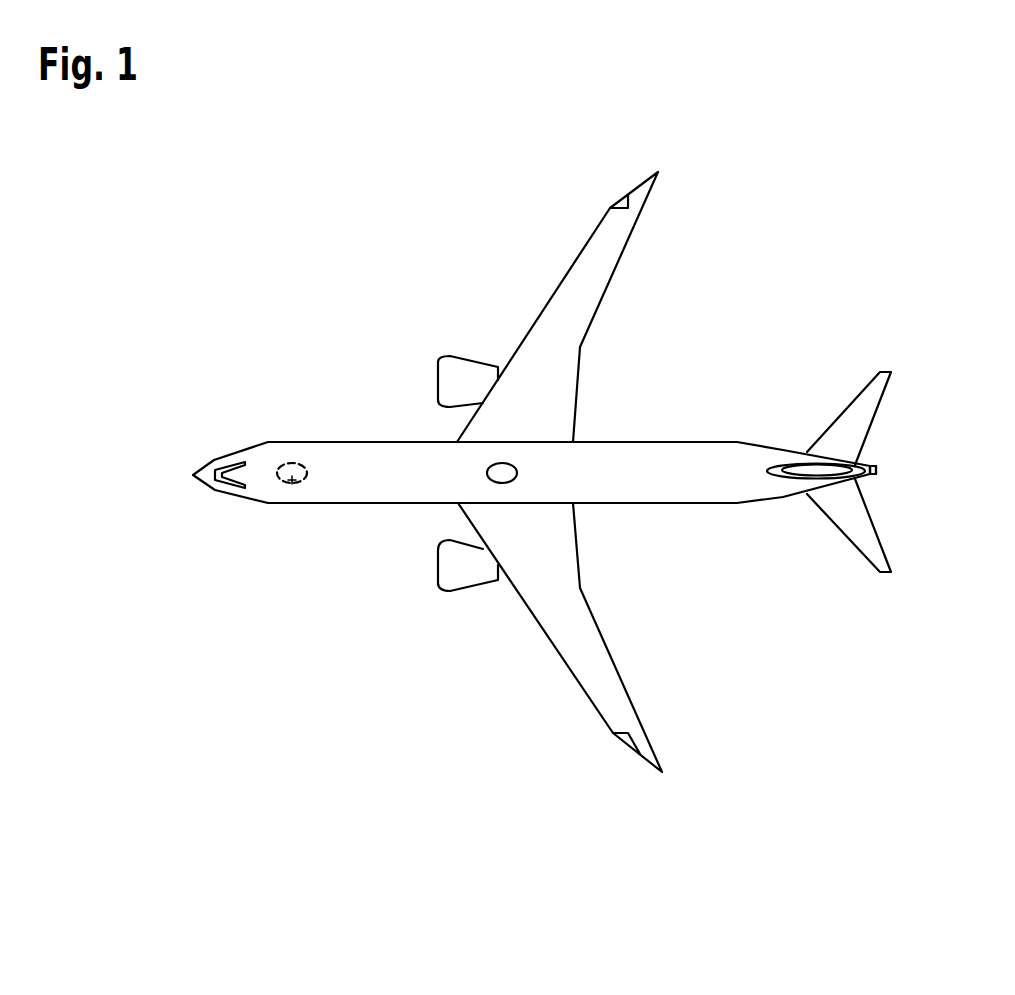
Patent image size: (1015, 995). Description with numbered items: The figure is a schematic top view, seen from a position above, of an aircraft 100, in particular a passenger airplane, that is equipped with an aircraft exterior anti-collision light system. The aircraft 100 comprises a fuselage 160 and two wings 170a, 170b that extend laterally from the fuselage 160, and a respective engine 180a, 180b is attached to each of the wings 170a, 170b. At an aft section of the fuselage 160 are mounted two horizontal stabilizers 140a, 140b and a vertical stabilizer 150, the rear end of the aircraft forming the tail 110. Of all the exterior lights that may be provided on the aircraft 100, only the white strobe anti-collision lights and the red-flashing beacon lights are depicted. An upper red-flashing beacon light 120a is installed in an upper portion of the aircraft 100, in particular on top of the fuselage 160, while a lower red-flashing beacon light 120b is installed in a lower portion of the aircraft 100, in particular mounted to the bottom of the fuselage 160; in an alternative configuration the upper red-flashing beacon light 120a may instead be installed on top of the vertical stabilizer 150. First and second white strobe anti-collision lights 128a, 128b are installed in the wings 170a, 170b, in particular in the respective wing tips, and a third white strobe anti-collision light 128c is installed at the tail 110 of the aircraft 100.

The aircraft 100 is at (597, 474).
The tail 110 is at (886, 431).
The upper red-flashing beacon light 120a is at (489, 479).
The lower red-flashing beacon light 120b is at (292, 488).
The first white strobe anti-collision light 128a is at (624, 200).
The second white strobe anti-collision light 128b is at (628, 748).
The third white strobe anti-collision light 128c is at (883, 473).
The horizontal stabilizer 140a is at (877, 360).
The horizontal stabilizer 140b is at (878, 584).
The vertical stabilizer 150 is at (825, 467).
The fuselage 160 is at (670, 430).
The wing 170a is at (611, 267).
The wing 170b is at (614, 679).
The engine 180a is at (452, 348).
The engine 180b is at (453, 600).